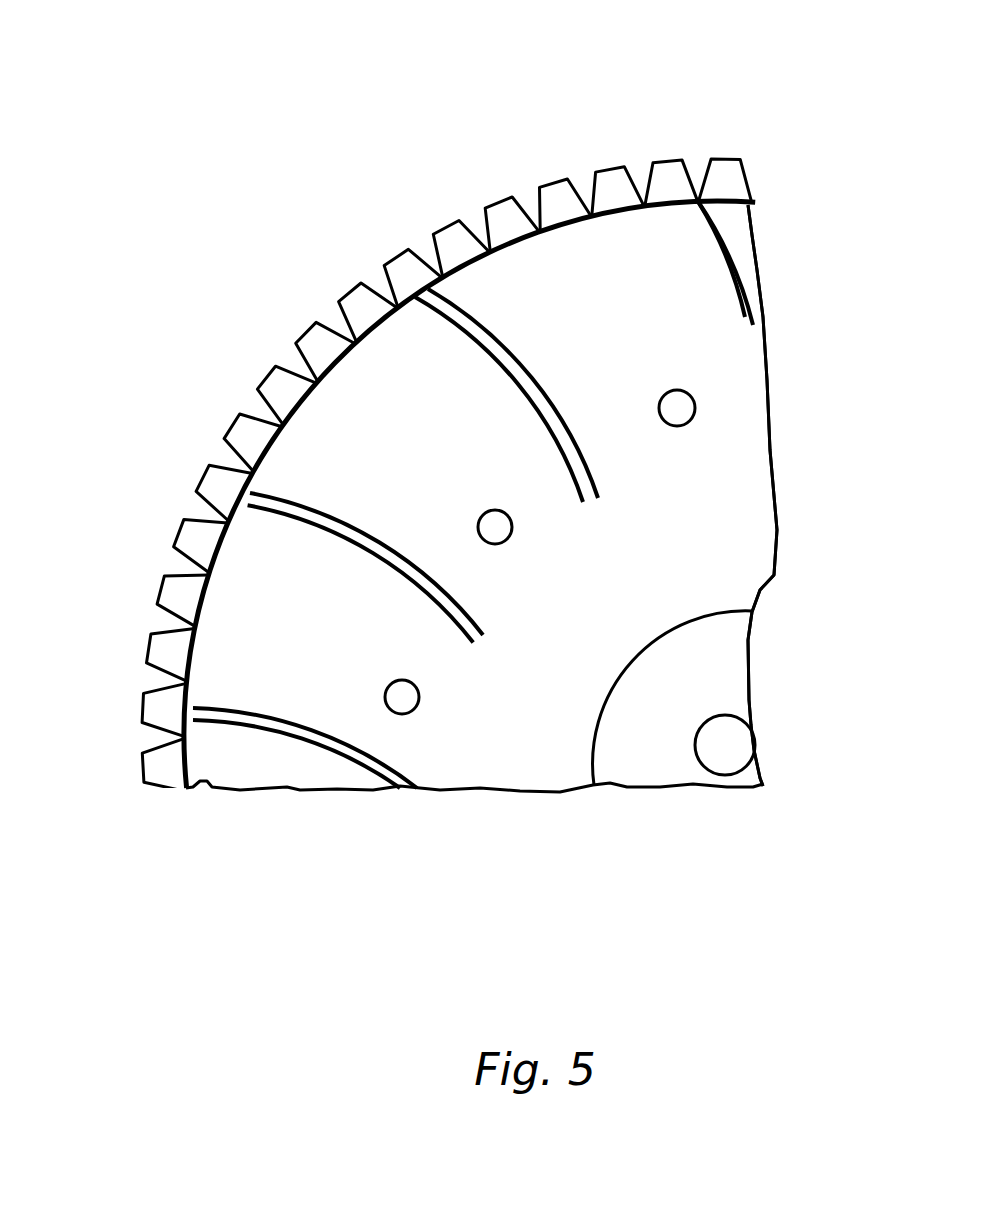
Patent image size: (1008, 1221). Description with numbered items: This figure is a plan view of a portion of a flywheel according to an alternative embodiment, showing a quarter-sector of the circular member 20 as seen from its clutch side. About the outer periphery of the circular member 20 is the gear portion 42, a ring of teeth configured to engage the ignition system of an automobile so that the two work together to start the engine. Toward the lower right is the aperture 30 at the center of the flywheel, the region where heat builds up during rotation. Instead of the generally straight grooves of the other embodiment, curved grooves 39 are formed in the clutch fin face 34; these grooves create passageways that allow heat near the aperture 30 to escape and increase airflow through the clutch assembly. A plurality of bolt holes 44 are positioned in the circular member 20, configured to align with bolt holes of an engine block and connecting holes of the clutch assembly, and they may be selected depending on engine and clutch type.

The circular member 20 is at (500, 333).
The aperture 30 is at (730, 737).
The clutch fin face 34 is at (640, 273).
The curved grooves 39 is at (697, 200).
The gear portion 42 is at (363, 305).
The bolt holes 44 is at (664, 395).